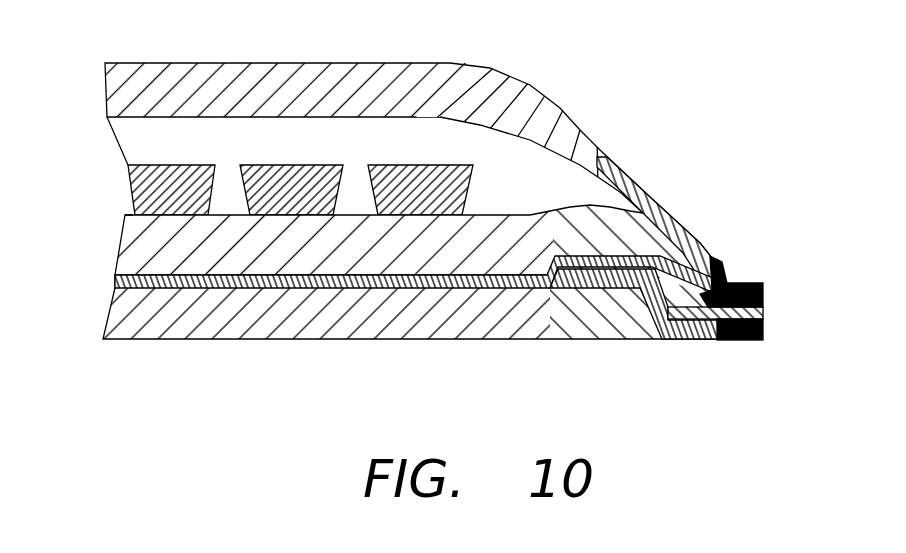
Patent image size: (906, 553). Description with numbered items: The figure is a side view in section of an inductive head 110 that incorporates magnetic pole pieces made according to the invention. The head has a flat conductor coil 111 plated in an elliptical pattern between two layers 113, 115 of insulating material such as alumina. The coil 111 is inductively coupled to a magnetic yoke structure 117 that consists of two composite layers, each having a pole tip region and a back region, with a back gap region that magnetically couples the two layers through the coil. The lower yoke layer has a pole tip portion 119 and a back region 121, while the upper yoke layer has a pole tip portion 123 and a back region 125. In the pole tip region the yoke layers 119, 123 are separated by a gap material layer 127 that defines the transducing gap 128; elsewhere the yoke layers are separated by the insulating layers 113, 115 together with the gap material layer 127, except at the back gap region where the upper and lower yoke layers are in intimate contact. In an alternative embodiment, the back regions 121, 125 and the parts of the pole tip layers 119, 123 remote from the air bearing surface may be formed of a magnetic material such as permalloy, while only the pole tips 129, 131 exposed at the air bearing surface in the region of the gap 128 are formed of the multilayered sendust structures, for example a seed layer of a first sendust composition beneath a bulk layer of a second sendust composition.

The inductive head 110 is at (412, 158).
The magnetic yoke structure 117 is at (150, 73).
The back region of upper yoke layer 125 is at (418, 63).
The insulating layer 115 is at (130, 140).
The flat conductor coil 111 is at (128, 183).
The insulating layer 113 is at (128, 240).
The gap material layer 127 is at (128, 285).
The back region of lower yoke layer 121 is at (407, 340).
The pole tip portion of upper yoke layer 123 is at (660, 195).
The pole tip portion of lower yoke layer 119 is at (730, 340).
The pole tip 131 is at (763, 293).
The transducing gap 128 is at (763, 313).
The pole tip 129 is at (763, 332).